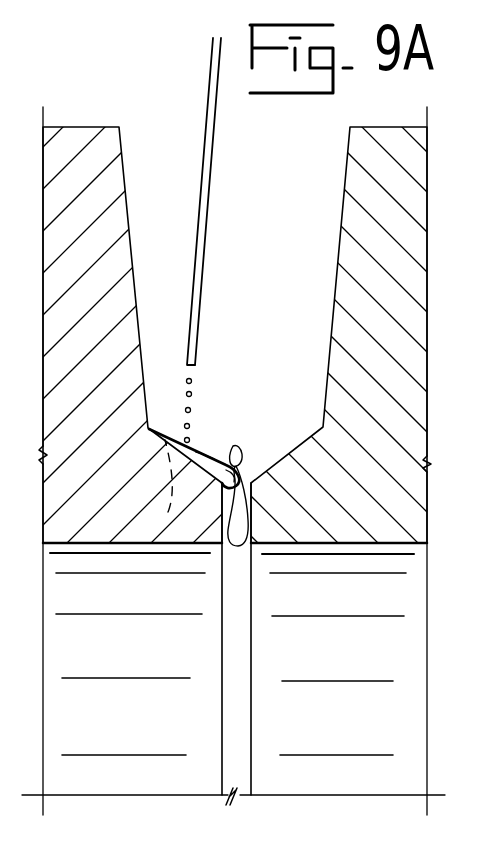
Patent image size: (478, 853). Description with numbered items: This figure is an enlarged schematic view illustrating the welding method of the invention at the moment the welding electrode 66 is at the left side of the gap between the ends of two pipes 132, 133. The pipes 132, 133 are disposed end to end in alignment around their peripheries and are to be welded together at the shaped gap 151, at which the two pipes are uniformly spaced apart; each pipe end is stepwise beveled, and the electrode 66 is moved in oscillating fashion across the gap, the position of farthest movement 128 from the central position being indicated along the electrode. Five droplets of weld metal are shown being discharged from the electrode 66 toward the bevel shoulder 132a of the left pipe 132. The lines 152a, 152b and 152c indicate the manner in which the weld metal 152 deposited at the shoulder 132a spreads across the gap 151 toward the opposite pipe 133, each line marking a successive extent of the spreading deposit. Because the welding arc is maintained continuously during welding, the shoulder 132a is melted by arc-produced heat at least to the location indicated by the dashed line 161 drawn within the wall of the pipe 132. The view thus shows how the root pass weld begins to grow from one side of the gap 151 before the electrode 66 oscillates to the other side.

The welding electrode 66 is at (224, 201).
The position of farthest movement 128 is at (207, 227).
The pipe 132 is at (82, 127).
The bevel shoulder 132a is at (157, 426).
The pipe 133 is at (392, 127).
The shaped gap 151 is at (246, 638).
The weld metal deposit 152 is at (278, 514).
The line indicating weld metal spread 152a is at (198, 453).
The line indicating weld metal spread 152b is at (233, 462).
The line indicating weld metal spread 152c is at (241, 466).
The dashed line 161 is at (168, 512).